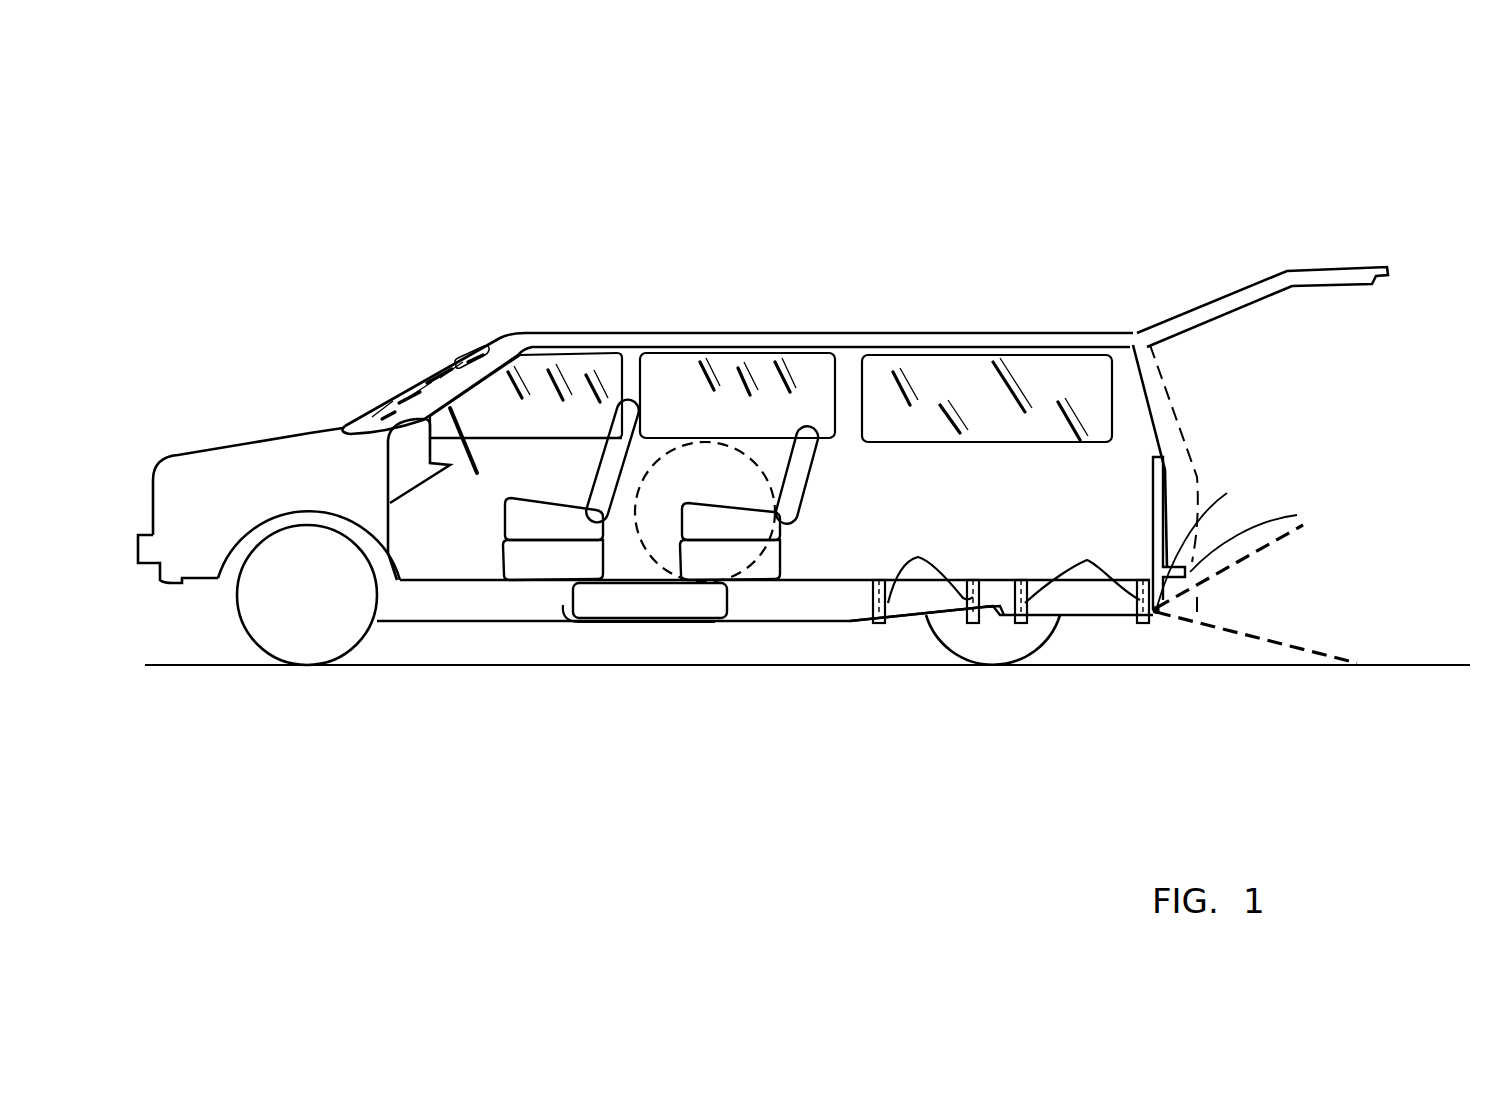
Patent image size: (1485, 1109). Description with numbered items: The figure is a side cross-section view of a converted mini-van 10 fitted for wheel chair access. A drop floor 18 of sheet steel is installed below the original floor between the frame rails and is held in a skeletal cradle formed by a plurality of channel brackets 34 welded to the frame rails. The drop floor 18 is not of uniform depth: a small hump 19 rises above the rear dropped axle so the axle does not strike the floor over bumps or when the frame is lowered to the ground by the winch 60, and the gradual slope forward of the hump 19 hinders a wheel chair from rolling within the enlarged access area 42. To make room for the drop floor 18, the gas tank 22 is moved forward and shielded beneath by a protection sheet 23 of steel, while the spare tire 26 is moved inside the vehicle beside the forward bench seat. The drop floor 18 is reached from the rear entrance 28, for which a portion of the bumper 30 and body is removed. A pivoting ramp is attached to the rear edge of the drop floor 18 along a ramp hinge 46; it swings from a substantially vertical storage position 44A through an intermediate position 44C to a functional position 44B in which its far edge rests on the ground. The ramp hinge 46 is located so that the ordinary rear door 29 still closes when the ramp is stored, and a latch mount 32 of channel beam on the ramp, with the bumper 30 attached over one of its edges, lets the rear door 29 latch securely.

The mini-van 10 is at (764, 252).
The drop floor 18 is at (913, 621).
The hump 19 is at (992, 624).
The gas tank 22 is at (637, 608).
The protection sheet 23 is at (658, 622).
The spare tire 26 is at (752, 505).
The rear entrance 28 is at (1203, 396).
The rear door 29 is at (1313, 273).
The bumper 30 is at (1261, 534).
The latch mount 32 is at (1213, 544).
The channel brackets 34 is at (1011, 575).
The access area 42 is at (1040, 517).
The storage position 44A is at (1162, 463).
The functional position 44B is at (1313, 652).
The intermediate position 44C is at (1270, 547).
The ramp hinge 46 is at (1158, 615).
The winch 60 is at (1198, 605).